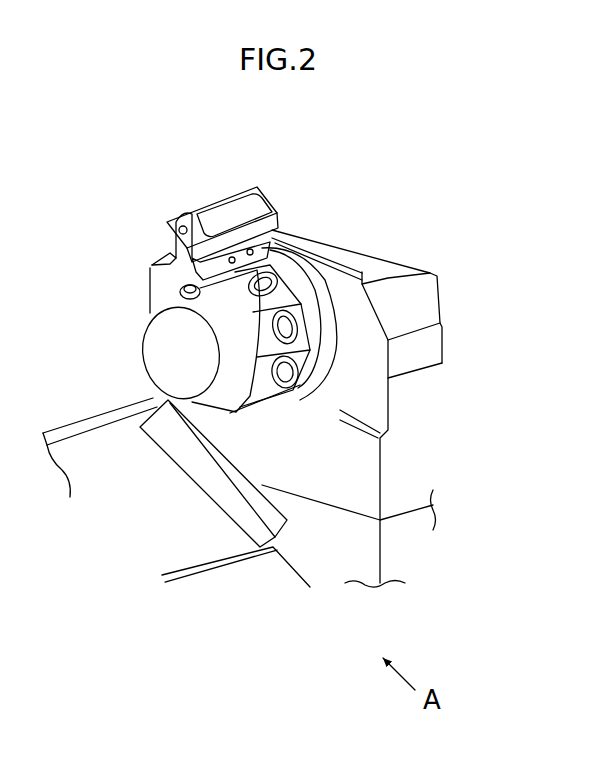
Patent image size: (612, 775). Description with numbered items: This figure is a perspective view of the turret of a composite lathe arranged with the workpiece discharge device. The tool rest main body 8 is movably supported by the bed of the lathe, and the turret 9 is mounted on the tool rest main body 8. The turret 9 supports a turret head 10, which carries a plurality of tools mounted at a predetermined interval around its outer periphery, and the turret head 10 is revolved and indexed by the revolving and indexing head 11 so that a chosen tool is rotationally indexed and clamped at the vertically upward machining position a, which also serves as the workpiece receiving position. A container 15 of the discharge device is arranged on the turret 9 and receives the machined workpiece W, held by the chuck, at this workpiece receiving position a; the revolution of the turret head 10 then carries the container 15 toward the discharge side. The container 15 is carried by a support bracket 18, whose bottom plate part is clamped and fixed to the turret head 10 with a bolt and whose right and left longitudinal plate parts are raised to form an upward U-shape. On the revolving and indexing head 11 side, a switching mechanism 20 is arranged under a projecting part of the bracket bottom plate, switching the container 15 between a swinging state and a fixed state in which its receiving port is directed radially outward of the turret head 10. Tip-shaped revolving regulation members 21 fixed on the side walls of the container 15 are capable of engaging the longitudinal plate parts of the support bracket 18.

The tool rest main body 8 is at (390, 257).
The turret 9 is at (157, 302).
The turret head 10 is at (330, 366).
The revolving and indexing head 11 is at (142, 345).
The container 15 is at (267, 198).
The support bracket 18 is at (170, 263).
The switching mechanism 20 is at (177, 287).
The revolving regulation member 21 is at (183, 212).
The workpiece W is at (232, 195).
The machining position (workpiece receiving position) a is at (248, 183).